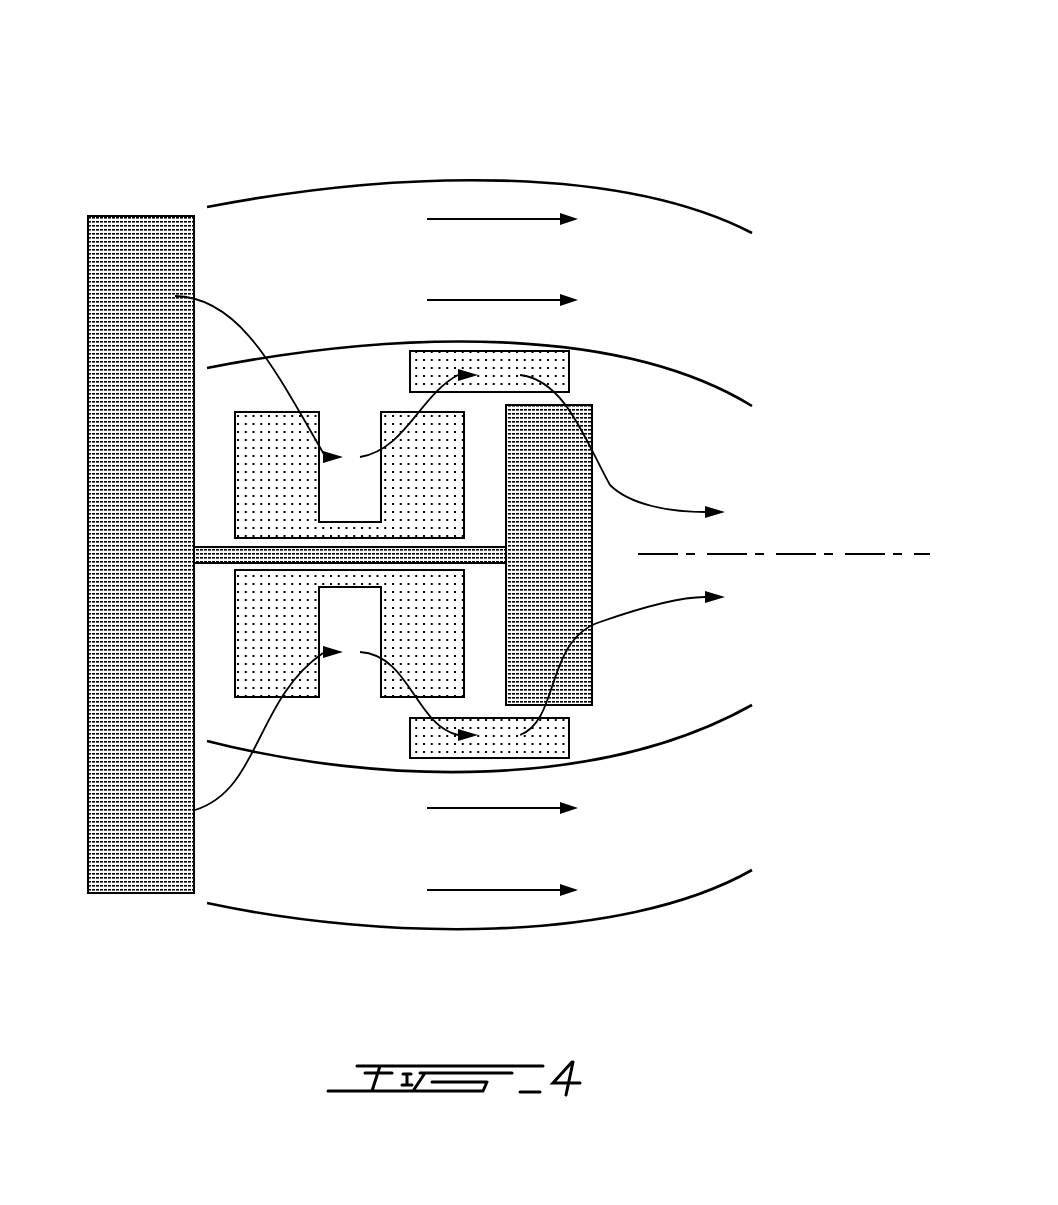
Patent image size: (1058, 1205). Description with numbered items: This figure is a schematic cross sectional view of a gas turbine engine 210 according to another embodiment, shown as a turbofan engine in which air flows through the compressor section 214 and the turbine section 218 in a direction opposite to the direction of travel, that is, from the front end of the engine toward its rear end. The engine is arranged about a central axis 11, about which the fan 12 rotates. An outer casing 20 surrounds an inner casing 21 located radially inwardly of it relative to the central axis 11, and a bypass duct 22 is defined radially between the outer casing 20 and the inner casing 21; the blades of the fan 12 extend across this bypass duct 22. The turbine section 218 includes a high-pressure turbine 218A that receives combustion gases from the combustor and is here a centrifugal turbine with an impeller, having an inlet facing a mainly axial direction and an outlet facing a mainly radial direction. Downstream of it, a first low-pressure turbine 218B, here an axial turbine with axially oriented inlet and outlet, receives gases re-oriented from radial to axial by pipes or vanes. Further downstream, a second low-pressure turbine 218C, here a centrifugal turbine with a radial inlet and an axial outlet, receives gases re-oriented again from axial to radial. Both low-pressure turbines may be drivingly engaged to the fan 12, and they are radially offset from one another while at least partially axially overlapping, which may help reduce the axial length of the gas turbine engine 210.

The gas turbine engine 210 is at (708, 118).
The fan 12 is at (110, 417).
The outer casing 20 is at (733, 220).
The inner casing 21 is at (715, 387).
The bypass duct 22 is at (688, 297).
The compressor section 214 is at (244, 616).
The turbine section 218 is at (600, 810).
The high-pressure turbine 218A is at (423, 625).
The first low-pressure turbine 218B is at (498, 362).
The second low-pressure turbine 218C is at (572, 682).
The central axis 11 is at (862, 557).